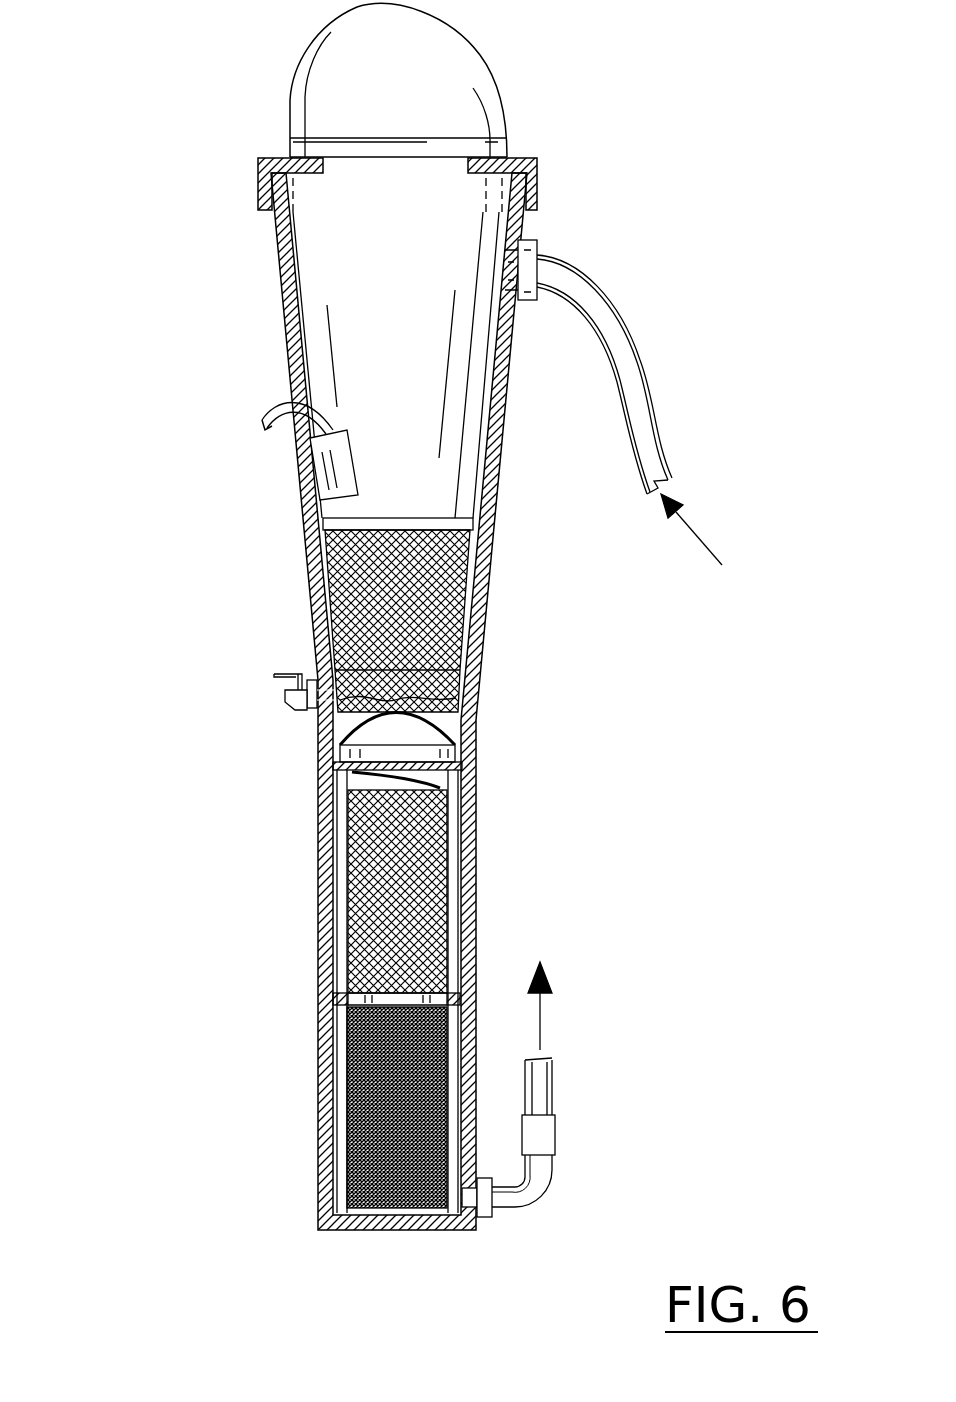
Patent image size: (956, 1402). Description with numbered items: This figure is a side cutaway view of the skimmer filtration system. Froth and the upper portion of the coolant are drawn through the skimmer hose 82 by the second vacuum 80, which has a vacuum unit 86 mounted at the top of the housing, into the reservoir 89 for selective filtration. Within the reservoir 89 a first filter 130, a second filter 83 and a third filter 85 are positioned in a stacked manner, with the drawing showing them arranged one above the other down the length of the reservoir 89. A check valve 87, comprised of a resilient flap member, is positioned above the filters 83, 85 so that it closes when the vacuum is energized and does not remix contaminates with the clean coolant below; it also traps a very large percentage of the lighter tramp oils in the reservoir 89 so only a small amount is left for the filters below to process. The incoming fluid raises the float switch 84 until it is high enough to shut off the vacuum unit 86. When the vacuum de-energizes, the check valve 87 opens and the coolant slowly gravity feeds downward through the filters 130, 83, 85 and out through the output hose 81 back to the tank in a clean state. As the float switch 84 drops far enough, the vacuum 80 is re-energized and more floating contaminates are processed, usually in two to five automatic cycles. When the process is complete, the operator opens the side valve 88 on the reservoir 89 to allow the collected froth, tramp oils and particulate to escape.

The second vacuum 80 is at (537, 157).
The output hose 81 is at (537, 1187).
The skimmer hose 82 is at (624, 380).
The second filter 83 is at (392, 921).
The float switch 84 is at (332, 466).
The third filter 85 is at (387, 1132).
The vacuum unit 86 is at (314, 90).
The check valve 87 is at (457, 747).
The side valve 88 is at (290, 695).
The reservoir 89 is at (282, 328).
The first filter 130 is at (333, 557).